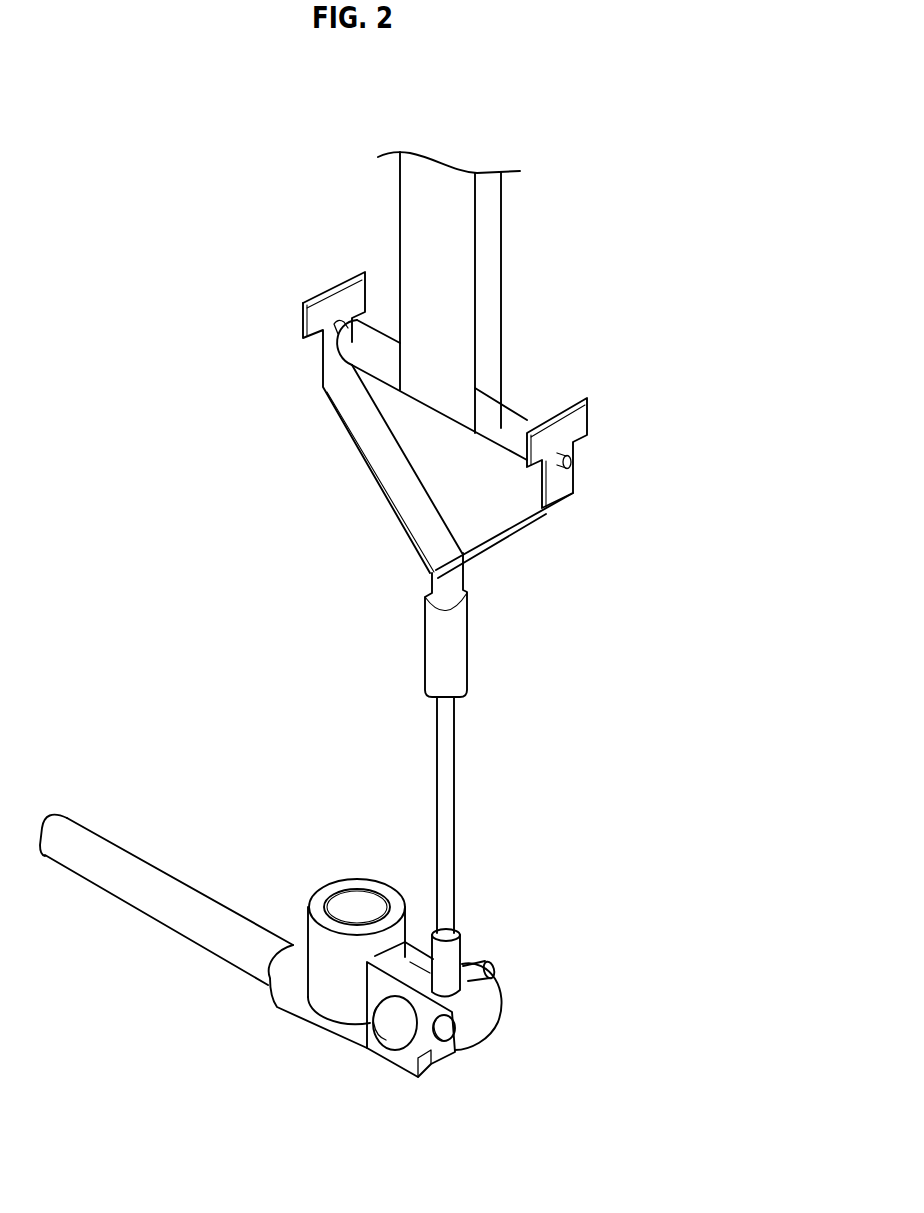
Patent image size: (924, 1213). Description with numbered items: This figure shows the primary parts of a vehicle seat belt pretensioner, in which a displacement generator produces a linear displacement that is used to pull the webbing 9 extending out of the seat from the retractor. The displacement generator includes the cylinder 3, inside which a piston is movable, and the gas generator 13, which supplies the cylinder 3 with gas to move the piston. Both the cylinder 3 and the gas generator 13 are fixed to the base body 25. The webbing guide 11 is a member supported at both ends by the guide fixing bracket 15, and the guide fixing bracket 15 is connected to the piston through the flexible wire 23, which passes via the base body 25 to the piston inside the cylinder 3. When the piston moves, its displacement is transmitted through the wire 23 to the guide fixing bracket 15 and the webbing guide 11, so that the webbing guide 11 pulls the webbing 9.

The cylinder 3 is at (150, 907).
The webbing 9 is at (488, 273).
The webbing guide 11 is at (360, 345).
The gas generator 13 is at (346, 887).
The guide fixing bracket 15 is at (556, 497).
The wire 23 is at (447, 793).
The base body 25 is at (332, 1022).